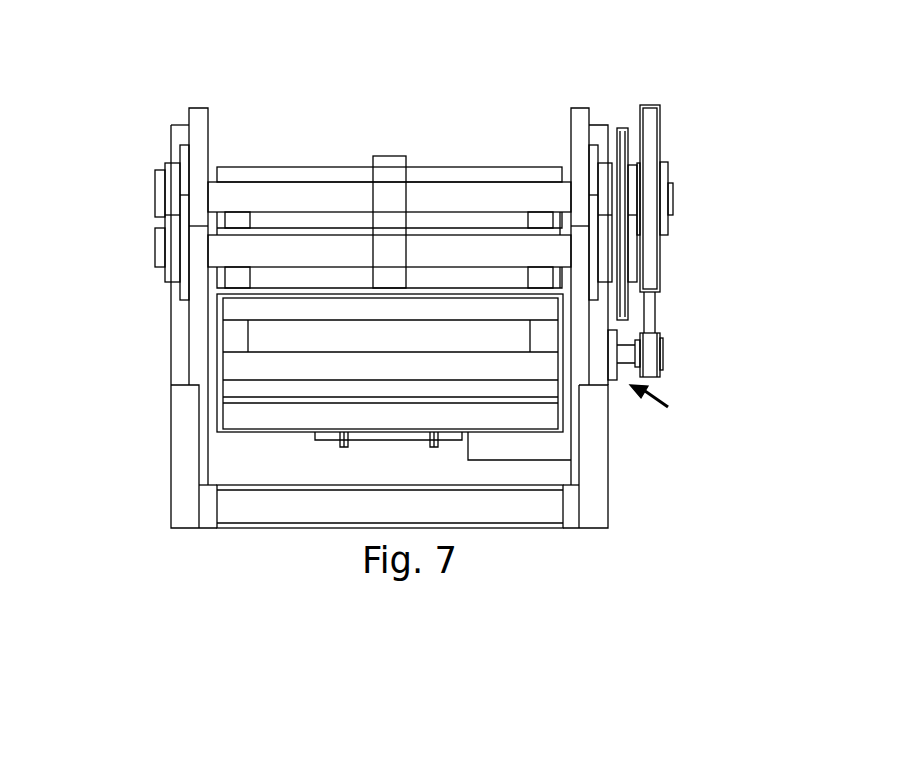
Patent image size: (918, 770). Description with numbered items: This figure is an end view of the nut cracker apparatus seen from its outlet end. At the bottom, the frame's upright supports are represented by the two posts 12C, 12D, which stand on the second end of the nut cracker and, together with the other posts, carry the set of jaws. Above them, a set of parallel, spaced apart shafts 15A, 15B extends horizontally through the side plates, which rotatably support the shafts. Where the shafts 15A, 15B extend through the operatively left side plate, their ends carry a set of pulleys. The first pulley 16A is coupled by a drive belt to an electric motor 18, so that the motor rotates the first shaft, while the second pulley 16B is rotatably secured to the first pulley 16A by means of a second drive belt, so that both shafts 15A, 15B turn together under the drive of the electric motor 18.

The post 12C is at (598, 487).
The post 12D is at (187, 468).
The shaft 15A is at (298, 190).
The shaft 15B is at (232, 263).
The first pulley 16A is at (657, 105).
The second pulley 16B is at (628, 312).
The electric motor 18 is at (673, 415).